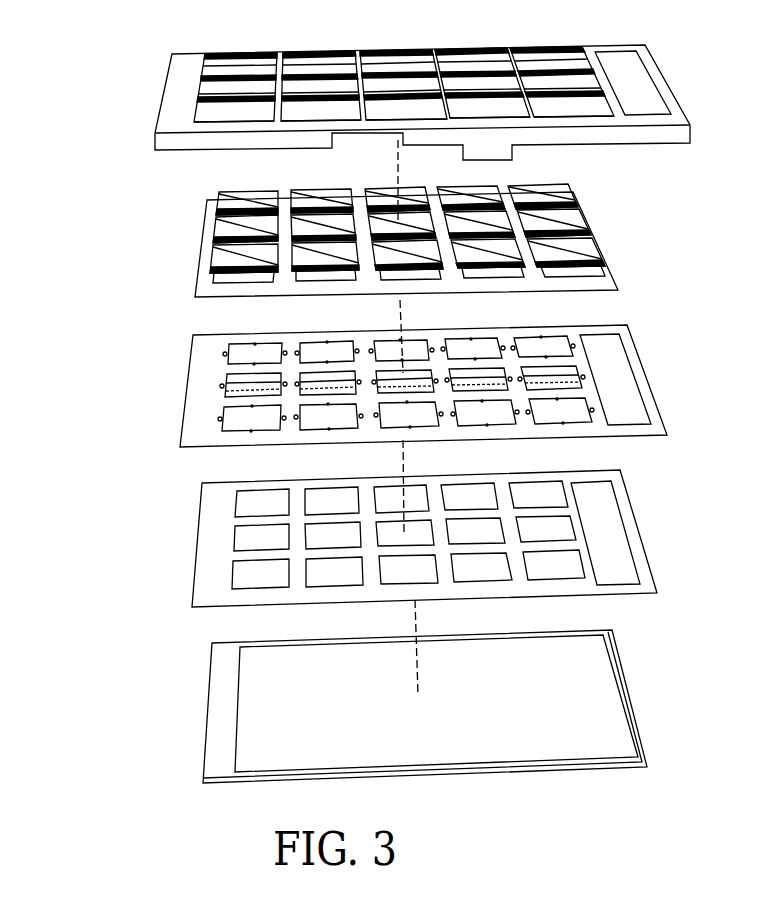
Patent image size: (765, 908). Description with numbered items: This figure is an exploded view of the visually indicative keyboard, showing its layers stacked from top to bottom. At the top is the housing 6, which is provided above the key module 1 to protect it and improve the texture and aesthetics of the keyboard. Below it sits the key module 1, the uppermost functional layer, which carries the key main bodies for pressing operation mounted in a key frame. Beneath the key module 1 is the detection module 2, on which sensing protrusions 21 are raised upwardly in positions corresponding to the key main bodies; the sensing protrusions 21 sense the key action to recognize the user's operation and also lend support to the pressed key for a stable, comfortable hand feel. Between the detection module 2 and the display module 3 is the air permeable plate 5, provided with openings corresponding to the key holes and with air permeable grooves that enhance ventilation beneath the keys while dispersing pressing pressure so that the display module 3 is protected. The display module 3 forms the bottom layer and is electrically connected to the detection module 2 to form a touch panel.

The housing 6 is at (190, 97).
The key module 1 is at (205, 248).
The detection module 2 is at (358, 386).
The sensing protrusion 21 is at (225, 419).
The air permeable plate 5 is at (215, 545).
The display module 3 is at (225, 718).